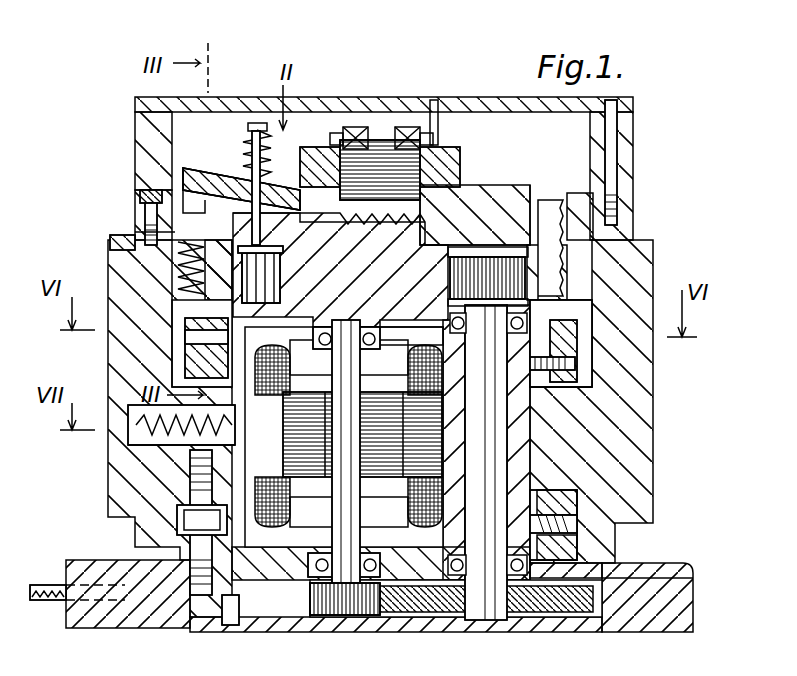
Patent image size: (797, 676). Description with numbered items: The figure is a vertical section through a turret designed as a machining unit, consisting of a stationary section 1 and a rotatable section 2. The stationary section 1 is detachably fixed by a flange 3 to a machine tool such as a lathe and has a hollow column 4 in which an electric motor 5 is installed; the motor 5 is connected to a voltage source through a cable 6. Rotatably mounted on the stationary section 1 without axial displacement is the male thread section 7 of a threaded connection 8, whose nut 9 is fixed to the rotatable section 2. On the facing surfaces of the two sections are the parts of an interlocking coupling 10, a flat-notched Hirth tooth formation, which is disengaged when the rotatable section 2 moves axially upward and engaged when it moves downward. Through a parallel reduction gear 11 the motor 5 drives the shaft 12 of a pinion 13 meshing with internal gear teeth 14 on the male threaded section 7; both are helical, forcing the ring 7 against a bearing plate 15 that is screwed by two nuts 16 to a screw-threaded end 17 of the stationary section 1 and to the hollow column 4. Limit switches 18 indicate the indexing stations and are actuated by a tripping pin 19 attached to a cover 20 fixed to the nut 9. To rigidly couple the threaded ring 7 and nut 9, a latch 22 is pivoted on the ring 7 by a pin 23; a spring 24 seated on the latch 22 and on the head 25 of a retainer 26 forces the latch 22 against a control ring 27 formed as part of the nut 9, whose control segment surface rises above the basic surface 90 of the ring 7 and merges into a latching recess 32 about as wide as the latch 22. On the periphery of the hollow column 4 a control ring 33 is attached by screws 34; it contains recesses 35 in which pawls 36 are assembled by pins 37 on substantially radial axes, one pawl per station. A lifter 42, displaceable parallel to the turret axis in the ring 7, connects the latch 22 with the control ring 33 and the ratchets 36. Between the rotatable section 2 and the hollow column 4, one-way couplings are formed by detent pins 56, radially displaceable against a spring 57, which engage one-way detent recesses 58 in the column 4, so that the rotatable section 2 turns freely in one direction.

The stationary section 1 is at (660, 538).
The rotatable section 2 is at (653, 245).
The flange 3 is at (690, 570).
The hollow column 4 is at (193, 475).
The electric motor 5 is at (308, 480).
The cable 6 is at (45, 588).
The male thread section 7 is at (482, 205).
The threaded connection 8 is at (605, 212).
The nut 9 is at (625, 230).
The interlocking coupling 10 is at (577, 522).
The parallel reduction gear 11 is at (472, 598).
The shaft 12 is at (465, 495).
The pinion 13 is at (500, 250).
The internal gear teeth 14 is at (335, 467).
The bearing plate 15 is at (466, 190).
The nuts 16 is at (305, 150).
The screw-threaded end 17 is at (381, 140).
The limit switches 18 is at (408, 127).
The tripping pin 19 is at (438, 112).
The cover 20 is at (625, 175).
The latch 22 is at (190, 172).
The pin 23 is at (309, 251).
The spring 24 is at (248, 160).
The head 25 is at (260, 118).
The retainer 26 is at (250, 130).
The control ring 27 is at (183, 182).
The latching recess 32 is at (145, 200).
The control ring 33 is at (530, 358).
The screws 34 is at (577, 363).
The recesses 35 is at (550, 320).
The pawls 36 is at (172, 297).
The pin 37 is at (183, 334).
The lifter 42 is at (115, 243).
The detent pins 56 is at (232, 470).
The spring 57 is at (140, 412).
The detent recesses 58 is at (530, 417).
The basic surface 90 is at (135, 232).